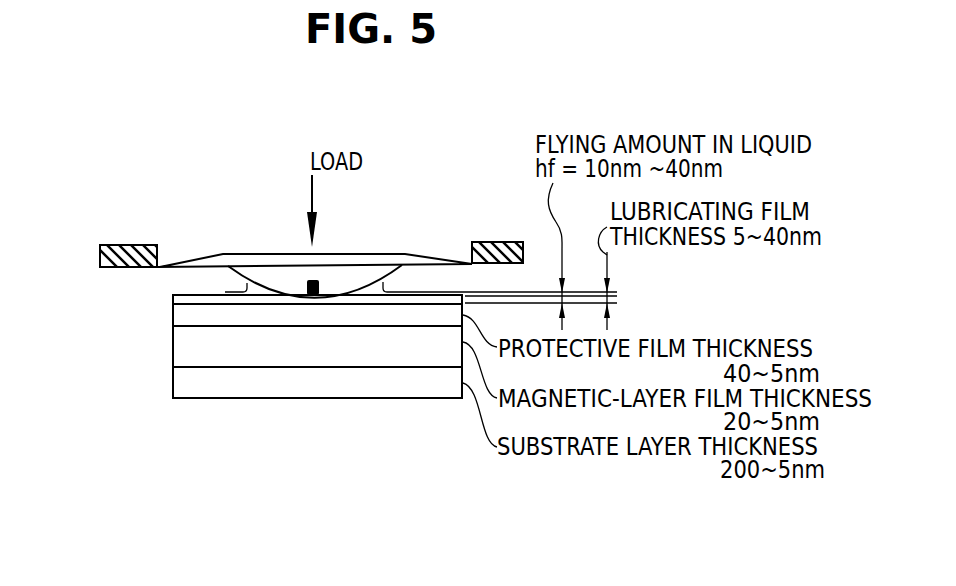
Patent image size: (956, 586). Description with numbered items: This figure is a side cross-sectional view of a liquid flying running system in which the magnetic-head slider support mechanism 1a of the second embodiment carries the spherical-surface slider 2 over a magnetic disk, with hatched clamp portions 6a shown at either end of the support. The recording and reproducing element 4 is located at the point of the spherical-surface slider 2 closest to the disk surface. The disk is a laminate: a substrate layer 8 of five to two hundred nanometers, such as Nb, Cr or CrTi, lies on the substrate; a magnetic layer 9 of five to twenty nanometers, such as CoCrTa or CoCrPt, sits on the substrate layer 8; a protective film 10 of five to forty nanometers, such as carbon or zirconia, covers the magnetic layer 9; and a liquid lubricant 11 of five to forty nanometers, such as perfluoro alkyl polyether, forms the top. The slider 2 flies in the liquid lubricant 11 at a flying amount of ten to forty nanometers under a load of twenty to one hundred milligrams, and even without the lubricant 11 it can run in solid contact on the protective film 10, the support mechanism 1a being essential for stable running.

The clamp member 6a is at (133, 245).
The magnetic-head slider support mechanism 1a is at (263, 268).
The recording and reproducing element 4 is at (318, 297).
The spherical-surface slider 2 is at (287, 293).
The liquid lubricant 11 is at (173, 299).
The protective film 10 is at (175, 320).
The magnetic layer 9 is at (175, 350).
The substrate layer 8 is at (175, 392).